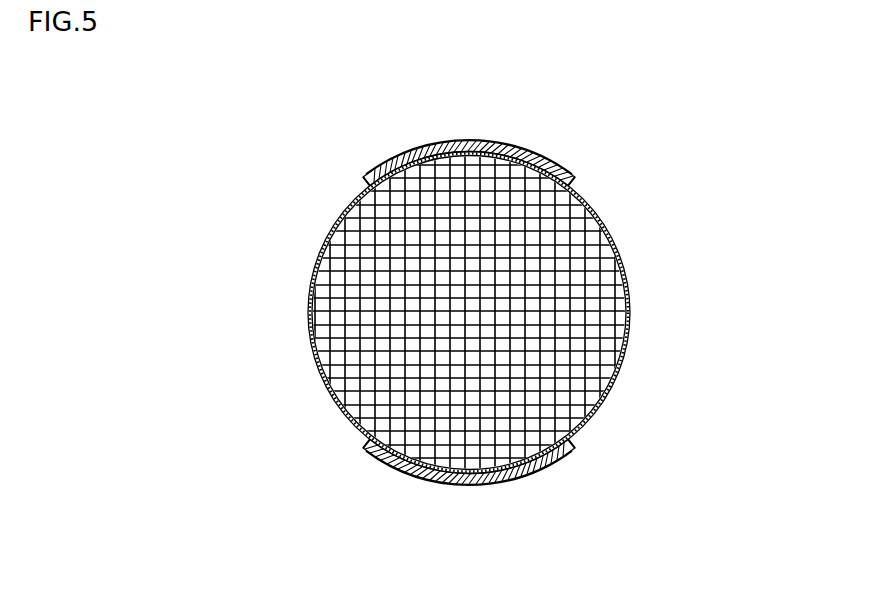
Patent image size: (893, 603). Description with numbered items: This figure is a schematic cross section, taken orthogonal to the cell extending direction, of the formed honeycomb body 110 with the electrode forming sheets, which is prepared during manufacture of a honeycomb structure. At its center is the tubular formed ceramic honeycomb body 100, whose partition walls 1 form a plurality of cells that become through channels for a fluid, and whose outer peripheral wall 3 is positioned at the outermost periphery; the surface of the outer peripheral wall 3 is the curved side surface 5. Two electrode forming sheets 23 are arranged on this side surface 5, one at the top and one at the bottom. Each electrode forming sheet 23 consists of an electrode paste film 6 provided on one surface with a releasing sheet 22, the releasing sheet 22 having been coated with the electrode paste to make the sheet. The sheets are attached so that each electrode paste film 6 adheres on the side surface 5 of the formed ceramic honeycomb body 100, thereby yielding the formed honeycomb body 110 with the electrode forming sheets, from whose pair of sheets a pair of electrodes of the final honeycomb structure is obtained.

The partition walls 1 is at (560, 233).
The outer peripheral wall 3 is at (619, 375).
The side surface 5 is at (308, 306).
The electrode paste film 6 is at (366, 181).
The releasing sheet 22 is at (432, 142).
The electrode forming sheet 23 is at (510, 136).
The formed ceramic honeycomb body 100 is at (640, 311).
The formed honeycomb body with the electrode forming sheets 110 is at (850, 51).